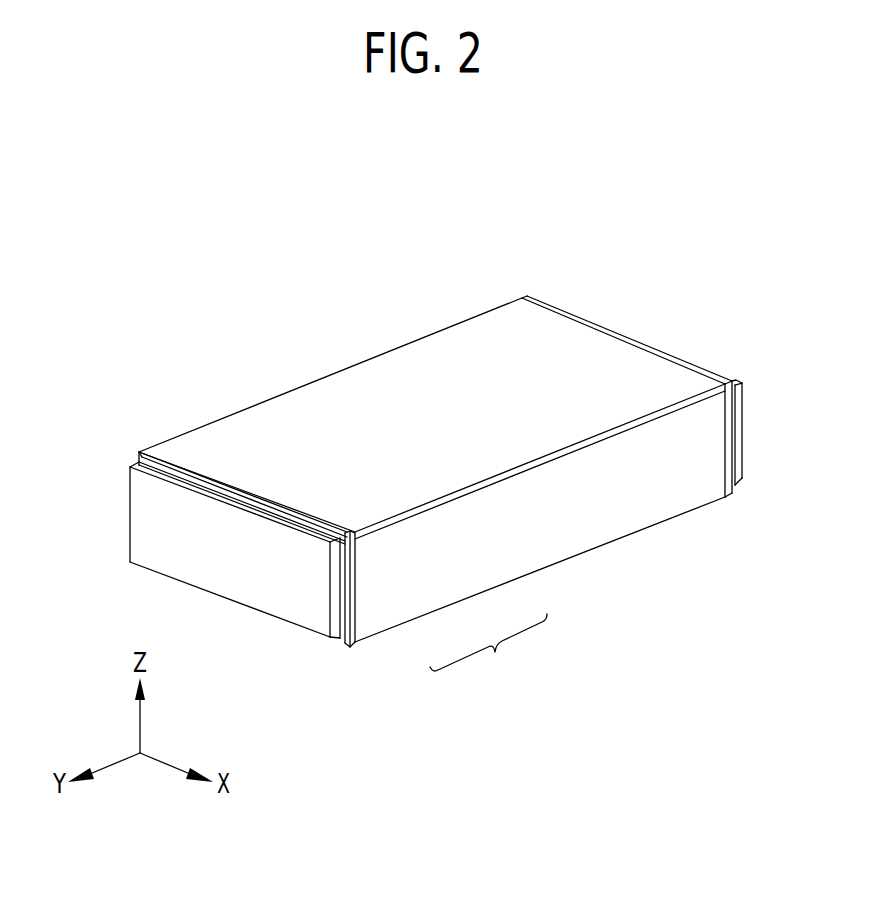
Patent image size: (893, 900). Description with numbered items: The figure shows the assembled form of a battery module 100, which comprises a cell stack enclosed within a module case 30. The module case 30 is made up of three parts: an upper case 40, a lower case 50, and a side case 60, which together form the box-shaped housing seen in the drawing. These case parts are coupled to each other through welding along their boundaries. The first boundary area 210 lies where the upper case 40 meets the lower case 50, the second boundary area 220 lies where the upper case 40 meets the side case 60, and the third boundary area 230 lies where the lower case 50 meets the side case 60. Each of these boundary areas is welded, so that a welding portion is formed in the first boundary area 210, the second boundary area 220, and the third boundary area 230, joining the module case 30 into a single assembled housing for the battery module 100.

The battery module 100 is at (129, 268).
The module case 30 is at (432, 491).
The upper case 40 is at (412, 490).
The lower case 50 is at (428, 597).
The side case 60 is at (352, 580).
The first boundary area 210 is at (541, 464).
The second boundary area 220 is at (168, 452).
The third boundary area 230 is at (357, 622).